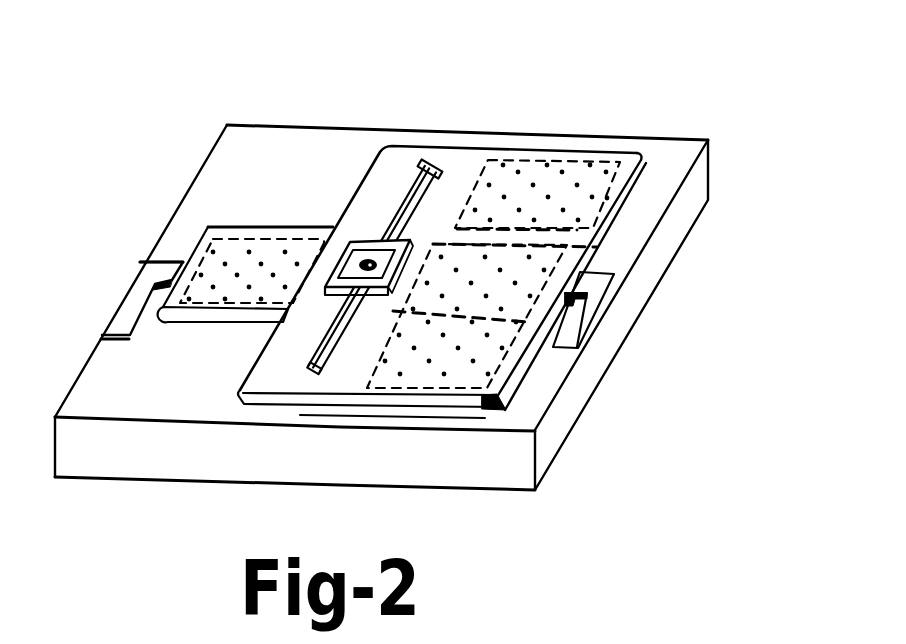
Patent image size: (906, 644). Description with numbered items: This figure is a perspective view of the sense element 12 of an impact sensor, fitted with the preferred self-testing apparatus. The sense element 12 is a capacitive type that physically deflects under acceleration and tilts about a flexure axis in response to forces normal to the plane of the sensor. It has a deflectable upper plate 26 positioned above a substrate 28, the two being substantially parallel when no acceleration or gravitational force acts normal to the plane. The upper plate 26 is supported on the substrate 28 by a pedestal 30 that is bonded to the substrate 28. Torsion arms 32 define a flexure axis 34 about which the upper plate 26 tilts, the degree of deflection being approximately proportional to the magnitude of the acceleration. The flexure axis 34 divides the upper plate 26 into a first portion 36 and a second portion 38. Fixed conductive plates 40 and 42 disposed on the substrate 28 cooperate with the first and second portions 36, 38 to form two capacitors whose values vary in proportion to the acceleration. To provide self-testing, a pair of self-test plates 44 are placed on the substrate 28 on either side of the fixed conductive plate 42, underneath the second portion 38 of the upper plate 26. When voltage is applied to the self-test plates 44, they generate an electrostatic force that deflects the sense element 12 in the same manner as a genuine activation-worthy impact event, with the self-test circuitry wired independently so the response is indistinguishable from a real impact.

The sense element 12 is at (409, 284).
The upper plate 26 is at (693, 135).
The substrate 28 is at (560, 418).
The pedestal 30 is at (392, 291).
The torsion arms 32 is at (430, 168).
The flexure axis 34 is at (442, 235).
The first portion 36 is at (241, 240).
The second portion 38 is at (610, 160).
The fixed conductive plate 40 is at (241, 236).
The fixed conductive plate 42 is at (597, 247).
The self-test plate 44 is at (536, 167).